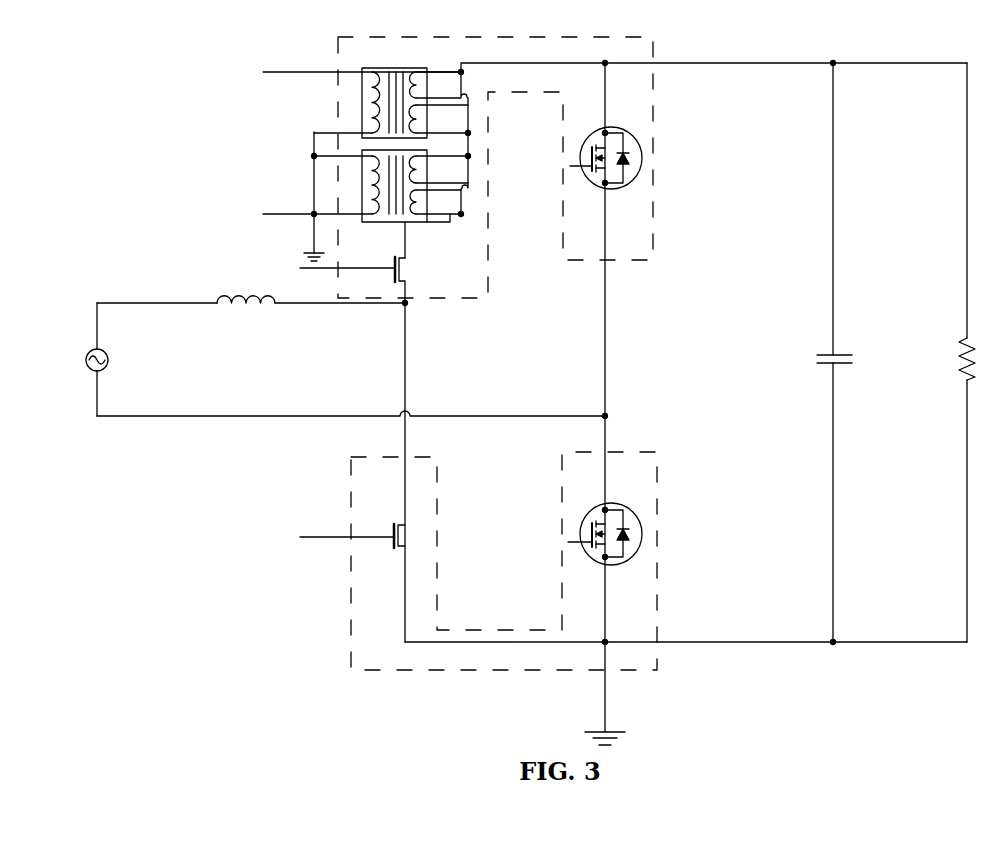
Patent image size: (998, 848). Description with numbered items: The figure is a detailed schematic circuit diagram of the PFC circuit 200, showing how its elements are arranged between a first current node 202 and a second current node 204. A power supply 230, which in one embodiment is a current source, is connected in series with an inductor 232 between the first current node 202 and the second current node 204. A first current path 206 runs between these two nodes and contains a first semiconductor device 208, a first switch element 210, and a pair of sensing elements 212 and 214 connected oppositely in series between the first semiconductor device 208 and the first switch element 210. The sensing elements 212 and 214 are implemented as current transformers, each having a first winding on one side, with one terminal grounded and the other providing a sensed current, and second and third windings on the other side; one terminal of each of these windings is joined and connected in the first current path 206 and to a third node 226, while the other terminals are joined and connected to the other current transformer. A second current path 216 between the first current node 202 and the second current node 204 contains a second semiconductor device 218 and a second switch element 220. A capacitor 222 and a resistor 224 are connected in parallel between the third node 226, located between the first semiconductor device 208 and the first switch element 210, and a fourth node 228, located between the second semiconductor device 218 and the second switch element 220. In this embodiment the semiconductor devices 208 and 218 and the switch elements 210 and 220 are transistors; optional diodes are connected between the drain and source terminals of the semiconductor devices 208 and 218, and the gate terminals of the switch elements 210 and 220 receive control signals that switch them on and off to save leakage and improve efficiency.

The PFC circuit 200 is at (130, 102).
The first current node 202 is at (410, 306).
The second current node 204 is at (610, 412).
The first current path 206 is at (654, 112).
The first semiconductor device 208 is at (643, 152).
The first switch element 210 is at (411, 268).
The first sensing element 212 is at (383, 66).
The second sensing element 214 is at (386, 224).
The second current path 216 is at (657, 565).
The second semiconductor device 218 is at (641, 512).
The second switch element 220 is at (393, 527).
The capacitor 222 is at (820, 347).
The resistor 224 is at (950, 355).
The third node 226 is at (843, 73).
The fourth node 228 is at (843, 634).
The power supply 230 is at (118, 362).
The inductor 232 is at (232, 292).